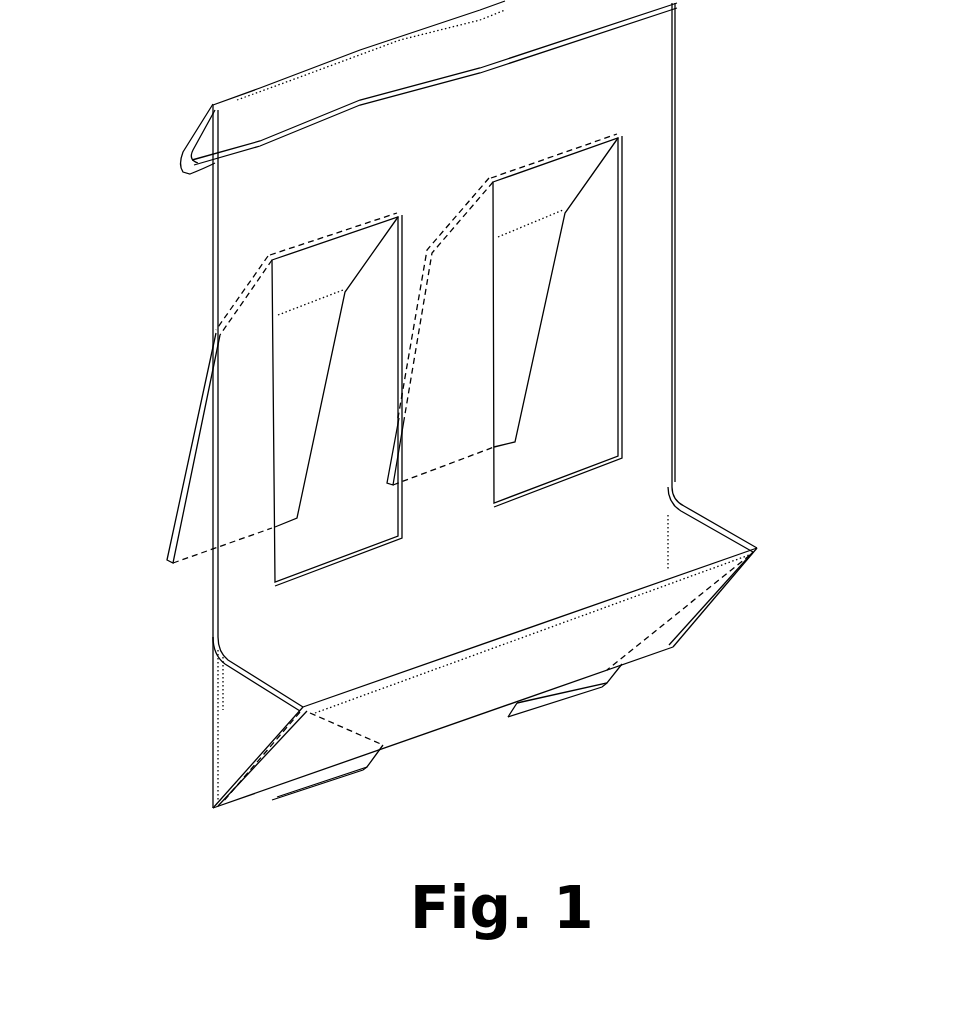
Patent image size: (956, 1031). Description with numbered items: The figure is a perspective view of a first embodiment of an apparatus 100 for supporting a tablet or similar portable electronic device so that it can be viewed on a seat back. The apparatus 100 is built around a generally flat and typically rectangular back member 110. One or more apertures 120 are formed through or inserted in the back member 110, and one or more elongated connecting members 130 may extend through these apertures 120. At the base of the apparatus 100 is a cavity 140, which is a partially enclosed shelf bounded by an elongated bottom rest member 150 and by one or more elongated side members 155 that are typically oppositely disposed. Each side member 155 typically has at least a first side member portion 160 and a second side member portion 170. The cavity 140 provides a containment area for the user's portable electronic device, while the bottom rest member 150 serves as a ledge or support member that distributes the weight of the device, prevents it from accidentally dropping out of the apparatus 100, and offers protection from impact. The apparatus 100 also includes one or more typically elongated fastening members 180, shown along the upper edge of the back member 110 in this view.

The apparatus 100 is at (112, 156).
The back member 110 is at (461, 167).
The apertures 120 is at (367, 516).
The elongated connecting members 130 is at (321, 360).
The cavity 140 is at (447, 632).
The elongated bottom rest member 150 is at (458, 700).
The elongated side members 155 is at (232, 755).
The first side member portion 160 is at (255, 710).
The second side member portion 170 is at (348, 717).
The elongated fastening members 180 is at (637, 15).